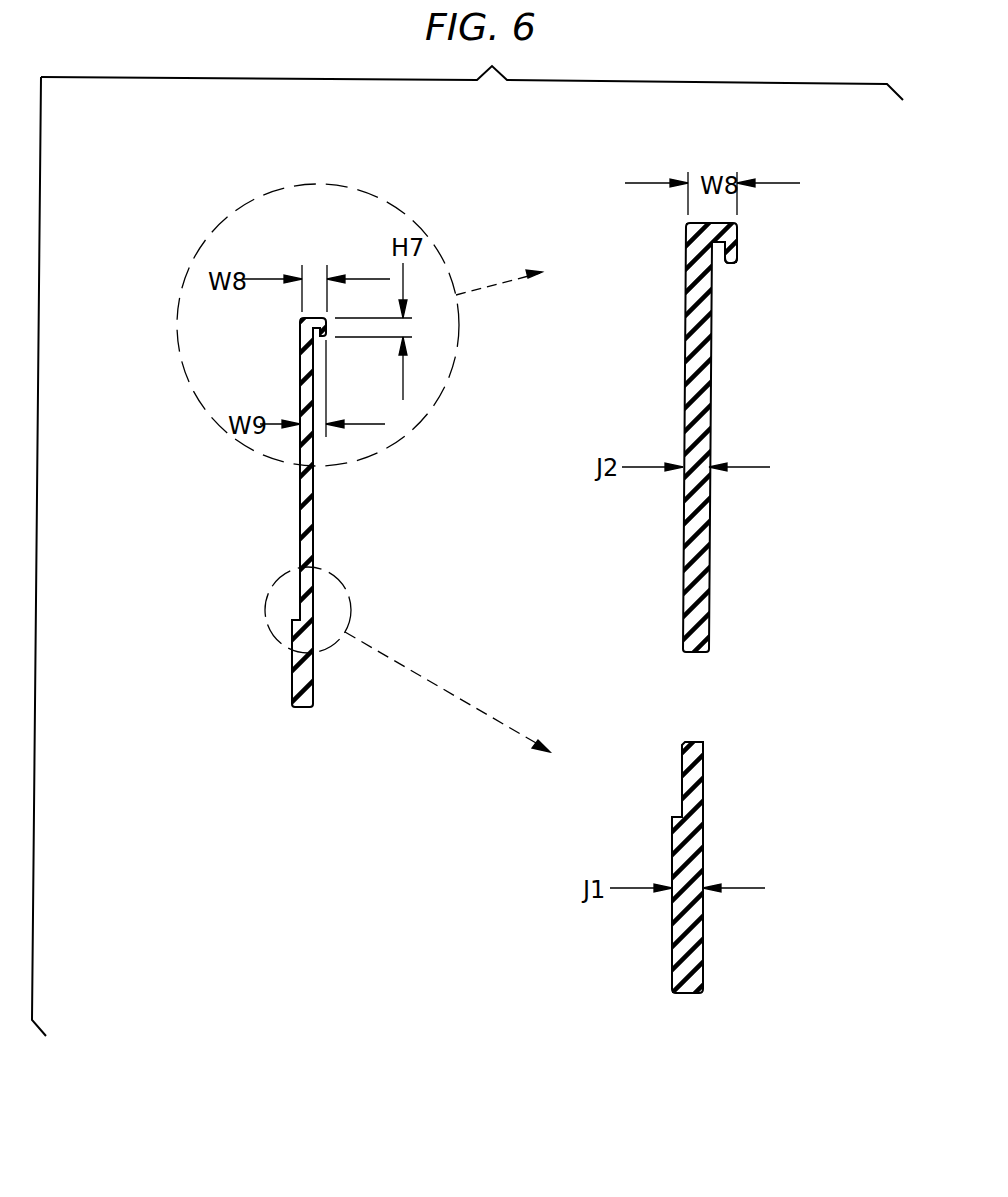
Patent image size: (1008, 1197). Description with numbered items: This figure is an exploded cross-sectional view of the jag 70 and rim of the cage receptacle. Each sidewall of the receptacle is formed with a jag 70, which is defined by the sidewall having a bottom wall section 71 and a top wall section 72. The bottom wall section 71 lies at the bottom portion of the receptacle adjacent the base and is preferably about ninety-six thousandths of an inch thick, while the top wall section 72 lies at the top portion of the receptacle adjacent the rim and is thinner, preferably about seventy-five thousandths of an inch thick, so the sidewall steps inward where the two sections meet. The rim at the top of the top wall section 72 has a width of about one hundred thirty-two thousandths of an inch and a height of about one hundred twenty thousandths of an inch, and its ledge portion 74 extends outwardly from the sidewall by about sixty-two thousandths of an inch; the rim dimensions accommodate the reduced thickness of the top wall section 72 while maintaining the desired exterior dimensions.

The jag 70 is at (265, 615).
The bottom wall section 71 is at (705, 955).
The top wall section 72 is at (712, 373).
The ledge portion 74 is at (737, 250).